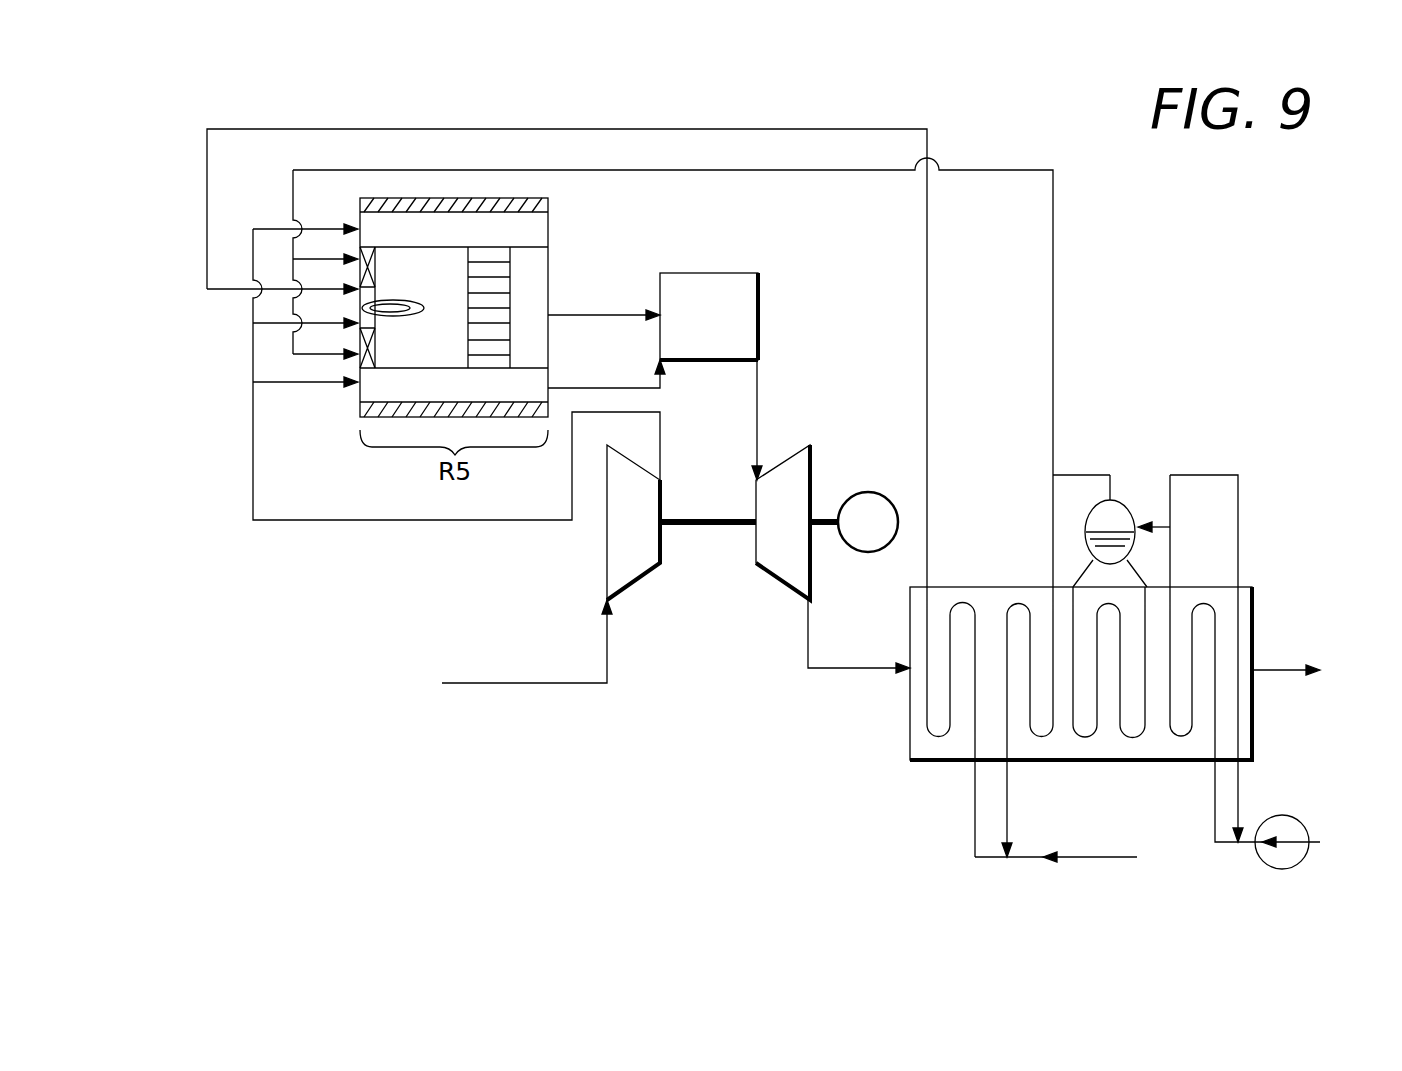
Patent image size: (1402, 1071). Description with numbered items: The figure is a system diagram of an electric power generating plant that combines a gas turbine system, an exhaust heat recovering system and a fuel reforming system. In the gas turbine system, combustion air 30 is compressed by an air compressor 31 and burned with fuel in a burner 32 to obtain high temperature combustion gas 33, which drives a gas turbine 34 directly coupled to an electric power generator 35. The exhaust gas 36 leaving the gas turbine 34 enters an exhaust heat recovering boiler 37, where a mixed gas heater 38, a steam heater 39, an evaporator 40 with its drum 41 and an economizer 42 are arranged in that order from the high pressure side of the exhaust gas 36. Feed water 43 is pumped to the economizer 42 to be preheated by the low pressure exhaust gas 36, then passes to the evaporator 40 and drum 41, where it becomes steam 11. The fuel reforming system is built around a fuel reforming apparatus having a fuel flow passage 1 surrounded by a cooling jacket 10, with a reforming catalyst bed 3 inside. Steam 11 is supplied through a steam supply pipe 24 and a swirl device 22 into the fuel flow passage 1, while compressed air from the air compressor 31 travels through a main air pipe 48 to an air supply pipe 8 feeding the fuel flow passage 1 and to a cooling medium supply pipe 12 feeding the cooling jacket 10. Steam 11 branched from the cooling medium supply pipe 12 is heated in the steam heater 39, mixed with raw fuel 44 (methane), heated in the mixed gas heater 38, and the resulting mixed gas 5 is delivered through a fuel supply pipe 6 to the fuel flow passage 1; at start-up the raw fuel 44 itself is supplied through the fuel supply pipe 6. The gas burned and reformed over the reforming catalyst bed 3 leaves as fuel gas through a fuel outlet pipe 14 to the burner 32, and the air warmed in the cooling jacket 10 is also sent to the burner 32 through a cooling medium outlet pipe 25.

The fuel flow passage 1 is at (459, 326).
The reforming catalyst bed 3 is at (492, 265).
The mixed gas 5 is at (243, 288).
The fuel supply pipe 6 is at (790, 129).
The air supply pipe 8 is at (262, 323).
The cooling jacket 10 is at (368, 220).
The steam 11 is at (296, 258).
The cooling medium supply pipe 12 is at (283, 228).
The fuel outlet pipe 14 is at (587, 313).
The swirl device 22 is at (388, 368).
The steam supply pipe 24 is at (1000, 169).
The cooling medium outlet pipe 25 is at (578, 387).
The combustion air 30 is at (540, 683).
The air compressor 31 is at (607, 583).
The burner 32 is at (760, 333).
The high temperature combustion gas 33 is at (756, 425).
The gas turbine 34 is at (813, 442).
The electric power generator 35 is at (877, 493).
The exhaust gas 36 is at (850, 690).
The exhaust heat recovering boiler 37 is at (1252, 590).
The mixed gas heater 38 is at (945, 737).
The steam heater 39 is at (1043, 735).
The evaporator 40 is at (1135, 735).
The drum 41 is at (1130, 500).
The economizer 42 is at (1185, 735).
The feed water 43 is at (1320, 843).
The raw fuel 44 is at (1090, 857).
The main air pipe 48 is at (298, 522).